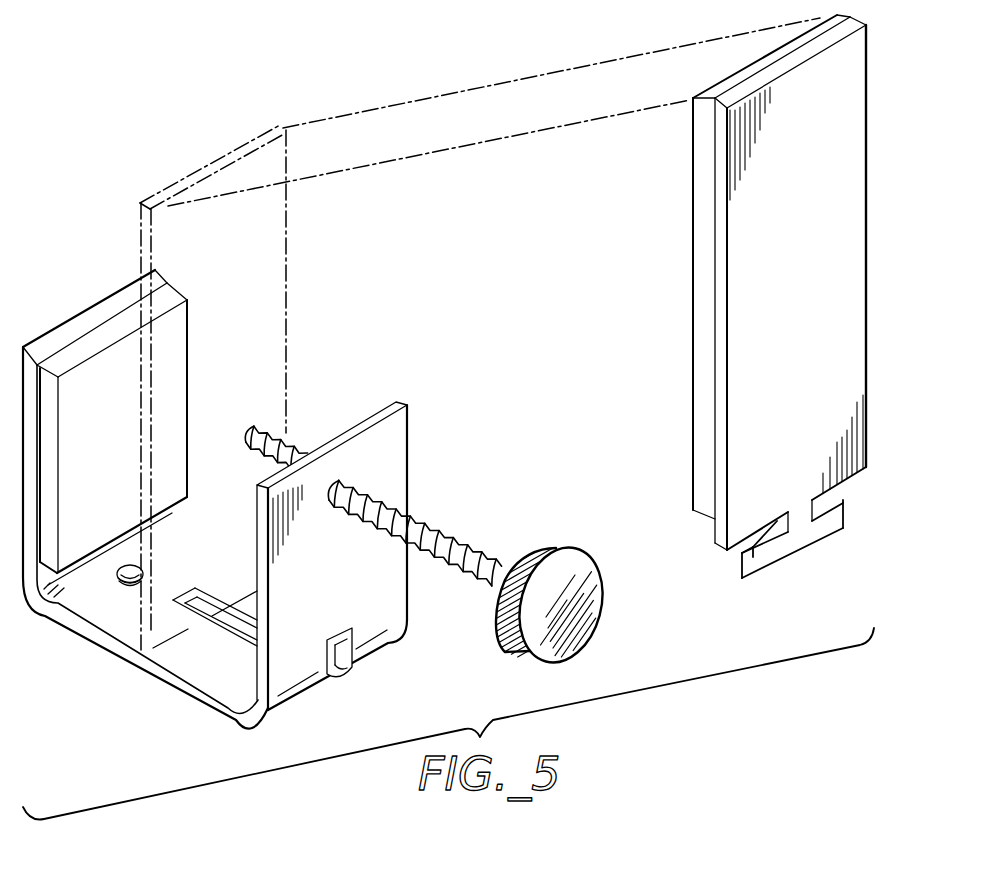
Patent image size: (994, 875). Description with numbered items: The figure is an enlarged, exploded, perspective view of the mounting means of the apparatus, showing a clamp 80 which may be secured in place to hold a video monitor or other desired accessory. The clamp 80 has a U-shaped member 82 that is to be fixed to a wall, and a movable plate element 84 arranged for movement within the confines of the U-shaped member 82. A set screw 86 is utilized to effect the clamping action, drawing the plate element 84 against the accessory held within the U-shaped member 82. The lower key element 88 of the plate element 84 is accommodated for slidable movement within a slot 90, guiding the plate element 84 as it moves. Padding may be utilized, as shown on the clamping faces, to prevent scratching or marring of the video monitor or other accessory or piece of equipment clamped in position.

The clamp 80 is at (100, 300).
The U-shaped member 82 is at (402, 450).
The movable plate element 84 is at (737, 240).
The set screw 86 is at (453, 532).
The lower key element 88 is at (798, 548).
The slot 90 is at (225, 627).